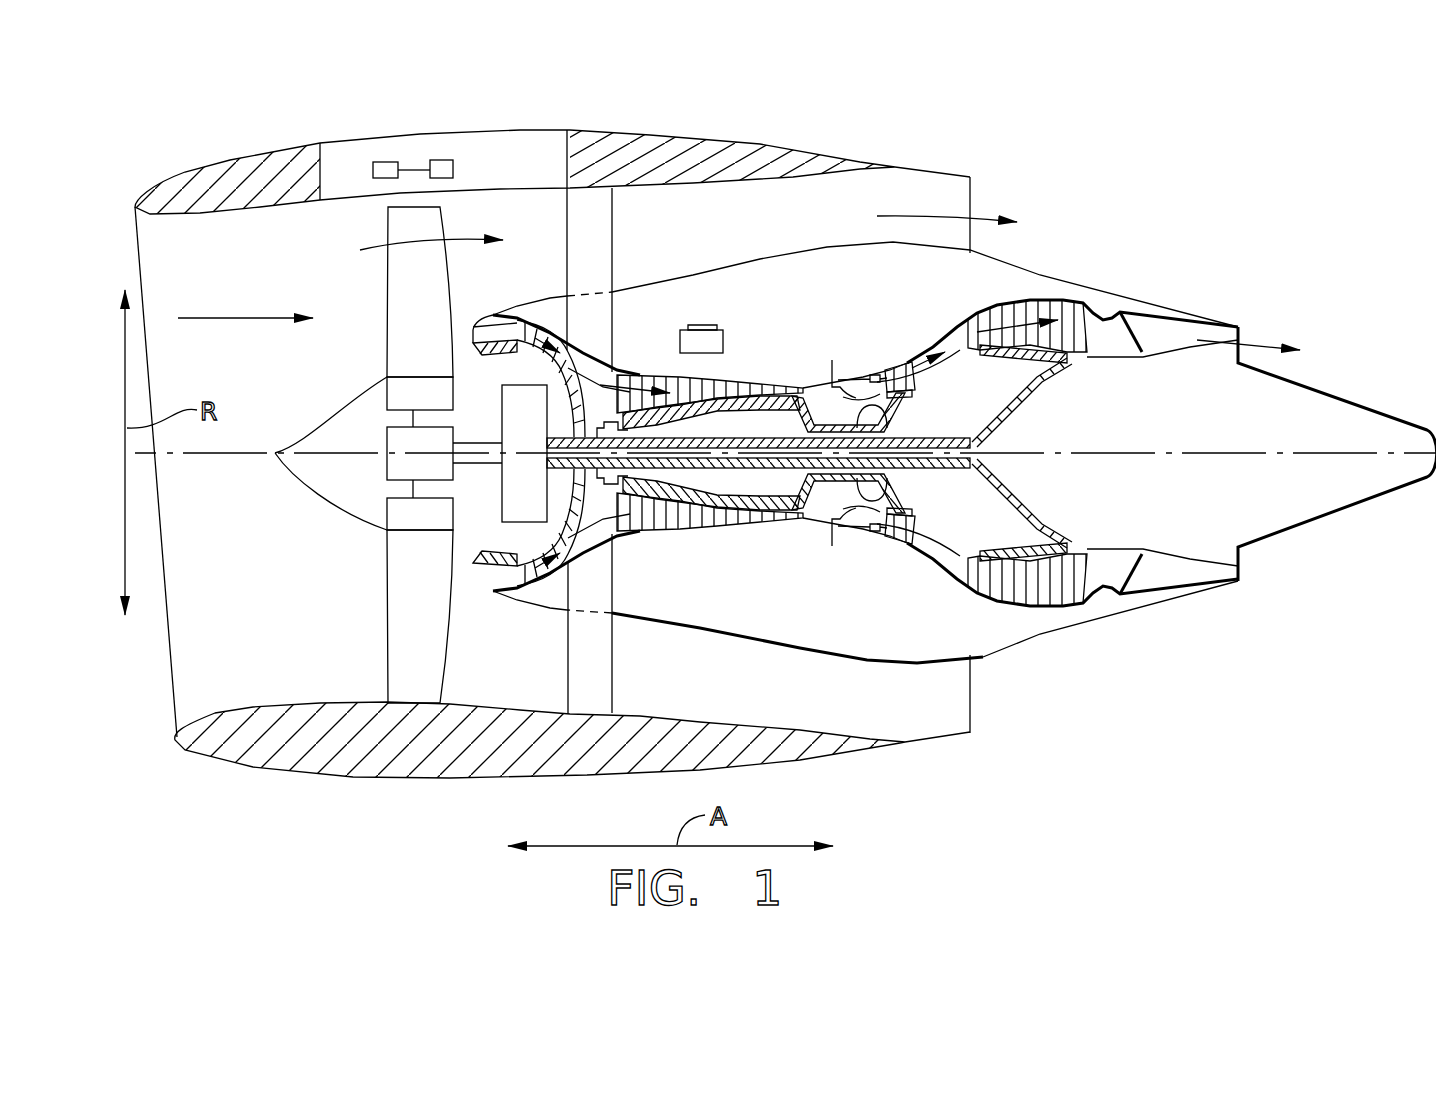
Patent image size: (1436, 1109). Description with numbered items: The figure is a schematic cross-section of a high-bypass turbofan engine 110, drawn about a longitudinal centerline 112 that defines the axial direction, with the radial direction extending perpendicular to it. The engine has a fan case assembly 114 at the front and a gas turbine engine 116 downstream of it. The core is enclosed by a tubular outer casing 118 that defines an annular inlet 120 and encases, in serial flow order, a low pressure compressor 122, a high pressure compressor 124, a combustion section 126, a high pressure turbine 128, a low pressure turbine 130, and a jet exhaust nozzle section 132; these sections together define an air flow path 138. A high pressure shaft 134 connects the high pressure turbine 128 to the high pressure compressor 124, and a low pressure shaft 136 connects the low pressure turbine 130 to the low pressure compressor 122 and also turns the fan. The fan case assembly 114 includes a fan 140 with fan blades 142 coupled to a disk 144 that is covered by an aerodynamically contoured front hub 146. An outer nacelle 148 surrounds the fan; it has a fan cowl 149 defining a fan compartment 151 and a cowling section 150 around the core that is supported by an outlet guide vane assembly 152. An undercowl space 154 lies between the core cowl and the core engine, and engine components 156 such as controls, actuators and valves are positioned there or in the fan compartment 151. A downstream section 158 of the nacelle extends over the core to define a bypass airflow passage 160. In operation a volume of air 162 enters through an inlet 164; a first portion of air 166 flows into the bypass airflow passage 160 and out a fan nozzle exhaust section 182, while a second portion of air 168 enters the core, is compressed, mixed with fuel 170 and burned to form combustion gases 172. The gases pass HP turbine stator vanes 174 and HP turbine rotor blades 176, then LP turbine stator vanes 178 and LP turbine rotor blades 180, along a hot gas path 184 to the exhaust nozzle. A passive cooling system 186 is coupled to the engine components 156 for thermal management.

The turbofan engine 110 is at (1142, 165).
The longitudinal centerline 112 is at (1173, 452).
The fan case assembly 114 is at (290, 245).
The gas turbine engine 116 is at (765, 355).
The outer casing 118 is at (800, 648).
The annular inlet 120 is at (500, 581).
The low pressure compressor 122 is at (553, 595).
The high pressure compressor 124 is at (650, 527).
The combustion section 126 is at (850, 535).
The high pressure turbine 128 is at (925, 536).
The low pressure turbine 130 is at (1075, 612).
The jet exhaust nozzle section 132 is at (1140, 585).
The high pressure shaft 134 is at (897, 413).
The low pressure shaft 136 is at (993, 425).
The air flow path 138 is at (588, 552).
The fan 140 is at (338, 509).
The fan blades 142 is at (383, 633).
The disk 144 is at (403, 393).
The front hub 146 is at (293, 473).
The outer nacelle 148 is at (437, 775).
The fan cowl 149 is at (400, 132).
The cowling section 150 is at (663, 133).
The fan compartment 151 is at (495, 145).
The outlet guide vane assembly 152 is at (612, 237).
The undercowl space 154 is at (760, 305).
The engine components 156 is at (453, 180).
The downstream section 158 is at (867, 163).
The bypass airflow passage 160 is at (828, 250).
The volume of air 162 is at (240, 315).
The inlet 164 is at (173, 722).
The first portion of air 166 is at (400, 250).
The second portion of air 168 is at (480, 325).
The fuel 170 is at (833, 560).
The combustion gases 172 is at (1027, 310).
The HP turbine stator vanes 174 is at (873, 548).
The HP turbine rotor blades 176 is at (890, 515).
The LP turbine stator vanes 178 is at (980, 593).
The LP turbine rotor blades 180 is at (992, 602).
The fan nozzle exhaust section 182 is at (970, 200).
The hot gas path 184 is at (953, 326).
The passive cooling system 186 is at (387, 162).